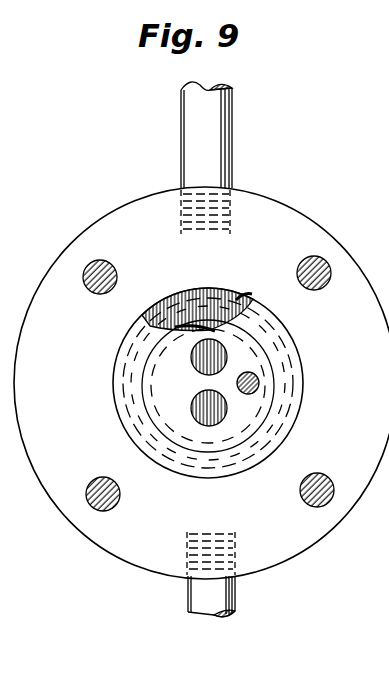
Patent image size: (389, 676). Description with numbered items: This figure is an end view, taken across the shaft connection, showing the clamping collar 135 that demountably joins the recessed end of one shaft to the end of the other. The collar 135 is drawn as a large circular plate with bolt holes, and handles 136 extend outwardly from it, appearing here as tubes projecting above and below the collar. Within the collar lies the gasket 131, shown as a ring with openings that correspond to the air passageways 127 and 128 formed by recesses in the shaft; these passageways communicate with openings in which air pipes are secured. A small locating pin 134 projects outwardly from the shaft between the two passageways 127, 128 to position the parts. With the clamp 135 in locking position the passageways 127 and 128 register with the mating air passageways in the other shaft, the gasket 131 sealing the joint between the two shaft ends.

The air passageway 127 is at (216, 355).
The air passageway 128 is at (216, 421).
The gasket 131 is at (127, 383).
The locating pin 134 is at (252, 383).
The clamping collar 135 is at (279, 224).
The handles 136 is at (215, 128).